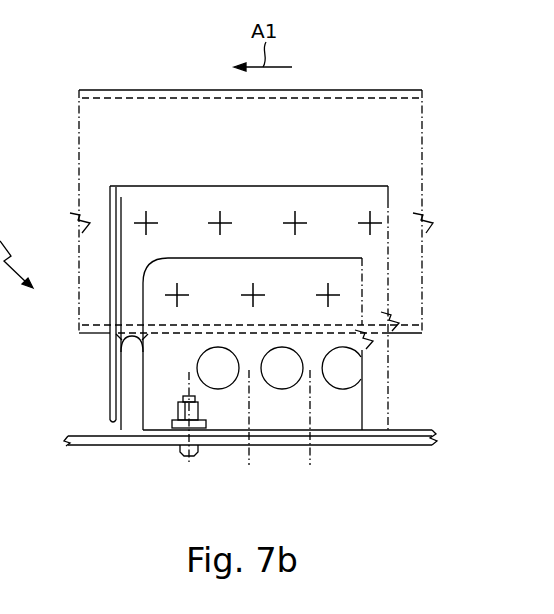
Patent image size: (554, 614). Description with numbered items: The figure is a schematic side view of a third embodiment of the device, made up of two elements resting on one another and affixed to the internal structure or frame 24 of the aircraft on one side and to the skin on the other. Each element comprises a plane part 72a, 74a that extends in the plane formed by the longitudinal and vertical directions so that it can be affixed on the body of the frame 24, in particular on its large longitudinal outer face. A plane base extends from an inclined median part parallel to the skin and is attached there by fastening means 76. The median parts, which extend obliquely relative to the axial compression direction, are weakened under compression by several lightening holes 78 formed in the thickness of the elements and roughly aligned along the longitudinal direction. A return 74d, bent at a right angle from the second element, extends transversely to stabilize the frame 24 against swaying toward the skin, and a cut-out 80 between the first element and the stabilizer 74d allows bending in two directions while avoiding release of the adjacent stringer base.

The frame 24 is at (402, 115).
The part of element 74 74a is at (372, 198).
The return 74d is at (113, 213).
The part of element 72 72a is at (348, 278).
The cut-out 80 is at (128, 403).
The lightening holes 78 is at (218, 372).
The fastening means 76 is at (181, 457).